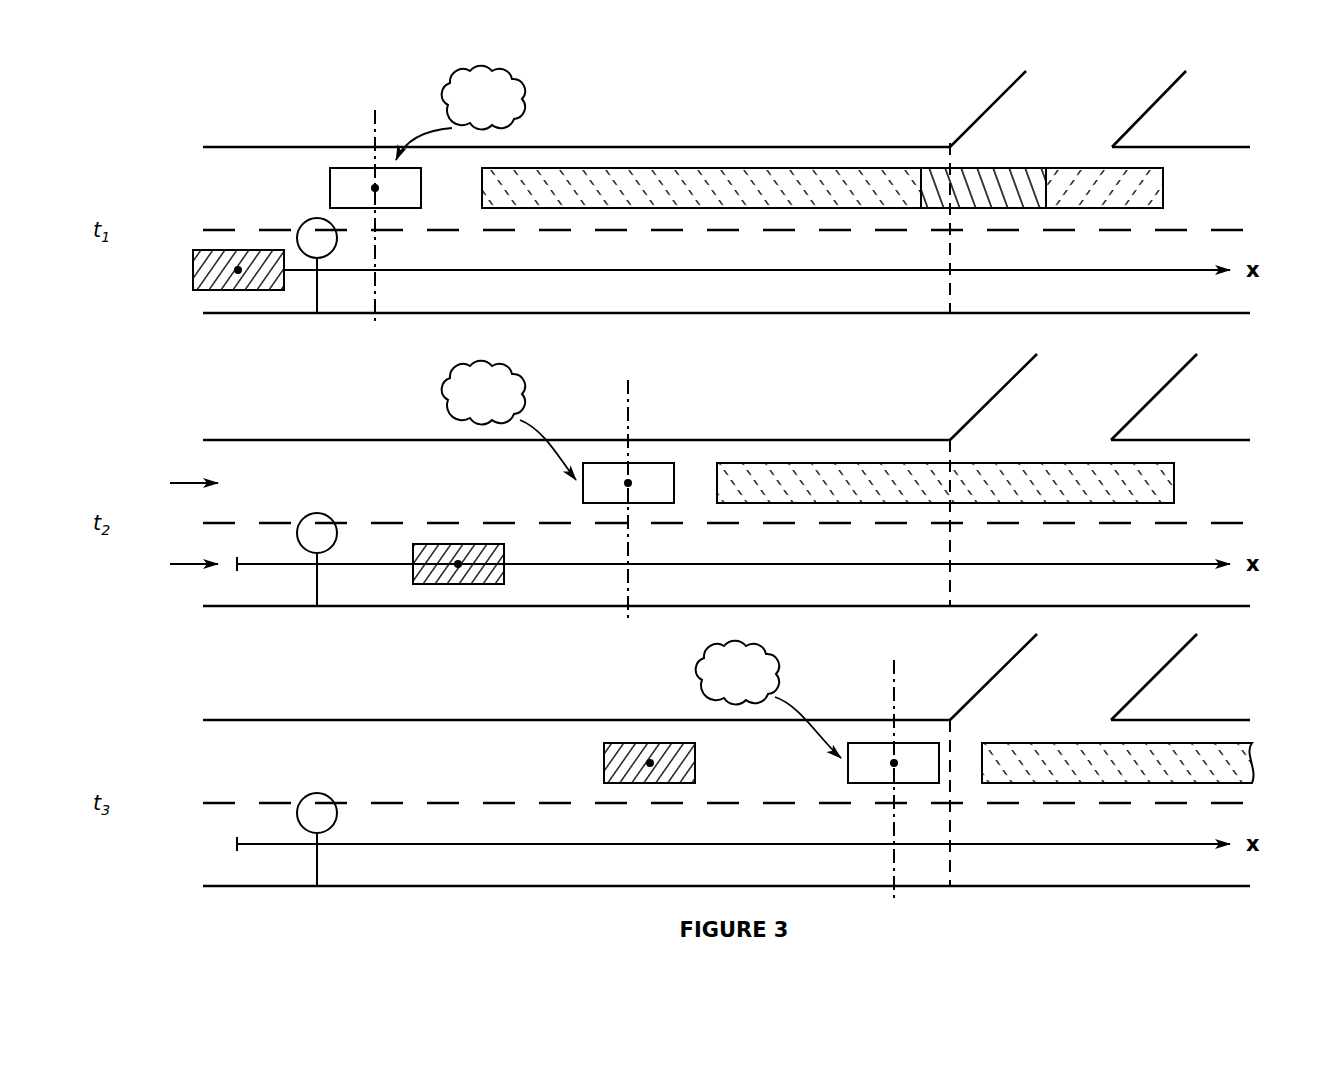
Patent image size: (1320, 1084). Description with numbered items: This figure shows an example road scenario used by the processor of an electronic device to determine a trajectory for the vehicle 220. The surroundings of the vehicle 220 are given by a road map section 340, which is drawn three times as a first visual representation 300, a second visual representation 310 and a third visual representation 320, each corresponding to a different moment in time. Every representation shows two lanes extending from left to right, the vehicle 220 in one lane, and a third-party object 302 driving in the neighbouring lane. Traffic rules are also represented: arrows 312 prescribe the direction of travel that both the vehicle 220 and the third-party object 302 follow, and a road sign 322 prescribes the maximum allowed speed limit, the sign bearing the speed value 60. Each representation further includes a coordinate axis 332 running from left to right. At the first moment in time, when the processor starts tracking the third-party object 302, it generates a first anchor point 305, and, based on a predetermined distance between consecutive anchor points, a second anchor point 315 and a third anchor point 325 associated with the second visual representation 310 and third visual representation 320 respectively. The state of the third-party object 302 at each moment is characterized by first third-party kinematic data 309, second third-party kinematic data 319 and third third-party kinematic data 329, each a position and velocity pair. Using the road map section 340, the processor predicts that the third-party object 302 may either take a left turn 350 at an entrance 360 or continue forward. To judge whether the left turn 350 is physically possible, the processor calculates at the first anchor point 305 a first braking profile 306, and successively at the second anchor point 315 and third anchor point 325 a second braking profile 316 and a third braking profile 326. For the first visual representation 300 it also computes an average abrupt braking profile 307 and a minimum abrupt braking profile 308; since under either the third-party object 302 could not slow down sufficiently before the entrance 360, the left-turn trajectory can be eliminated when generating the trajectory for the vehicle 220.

The first visual representation 300 is at (214, 162).
The second visual representation 310 is at (214, 455).
The third visual representation 320 is at (214, 735).
The third-party object 302 is at (348, 167).
The first third-party kinematic data 309 is at (442, 86).
The second third-party kinematic data 319 is at (444, 379).
The third third-party kinematic data 329 is at (700, 659).
The first braking profile 306 is at (824, 166).
The average abrupt braking profile 307 is at (996, 166).
The minimum abrupt braking profile 308 is at (1136, 166).
The second braking profile 316 is at (838, 462).
The third braking profile 326 is at (1190, 742).
The left turn 350 is at (1128, 91).
The road map section 340 is at (1182, 190).
The vehicle 220 is at (222, 250).
The speed limit sign 60 is at (317, 525).
The first anchor point 305 is at (376, 256).
The second anchor point 315 is at (629, 431).
The third anchor point 325 is at (893, 828).
The coordinate axis 332 is at (698, 264).
The entrance 360 is at (951, 283).
The road sign 322 is at (314, 289).
The arrows 312 is at (190, 562).